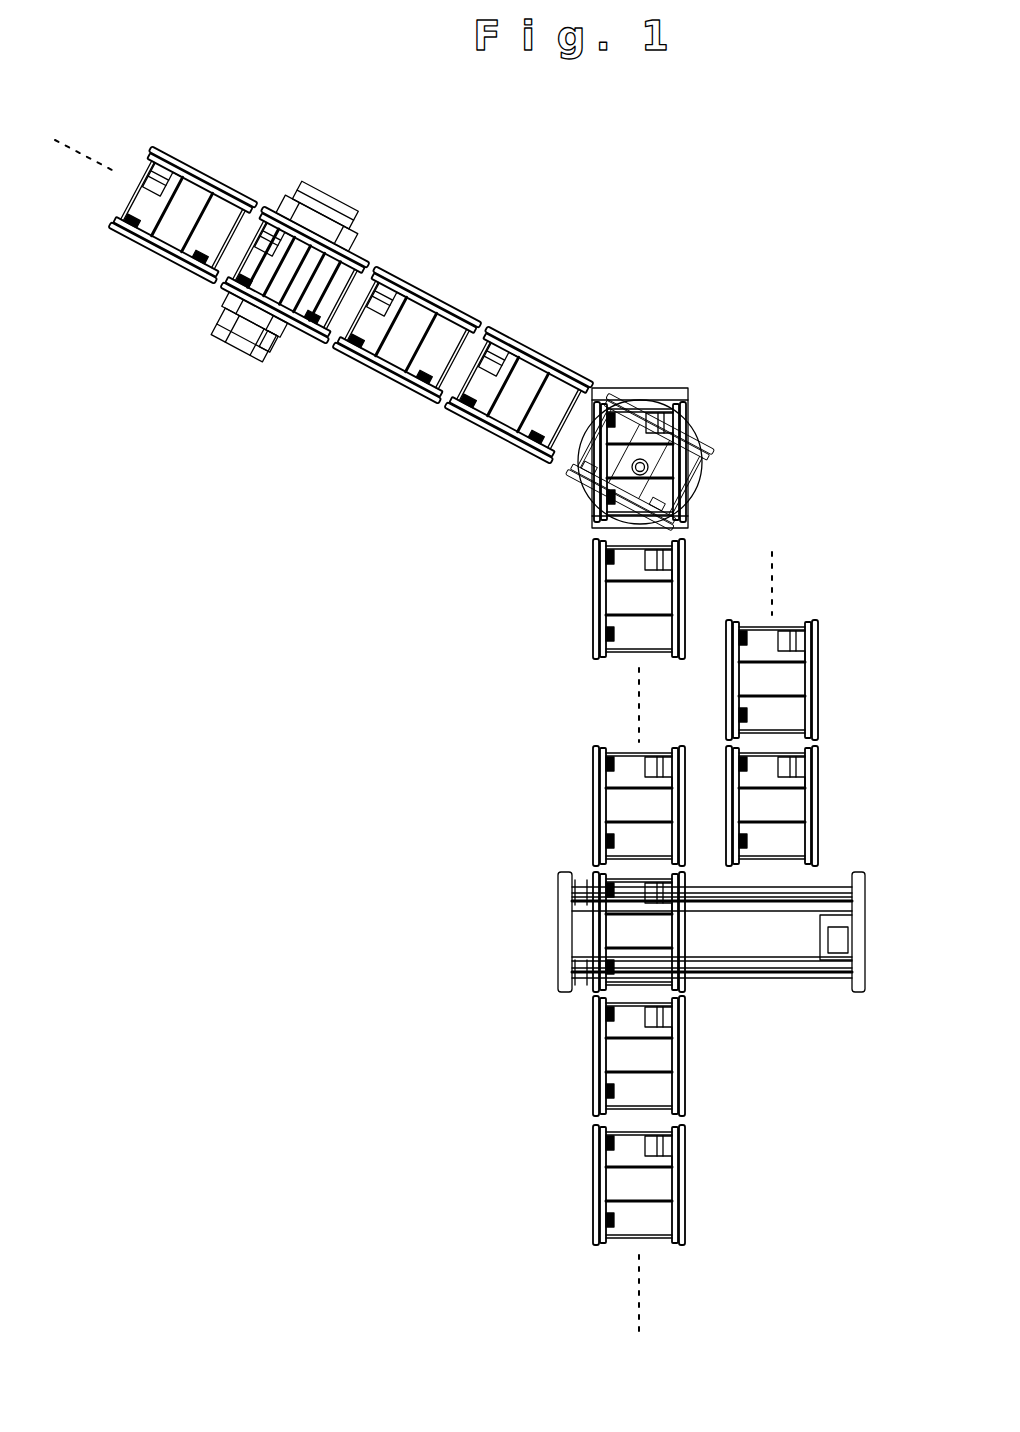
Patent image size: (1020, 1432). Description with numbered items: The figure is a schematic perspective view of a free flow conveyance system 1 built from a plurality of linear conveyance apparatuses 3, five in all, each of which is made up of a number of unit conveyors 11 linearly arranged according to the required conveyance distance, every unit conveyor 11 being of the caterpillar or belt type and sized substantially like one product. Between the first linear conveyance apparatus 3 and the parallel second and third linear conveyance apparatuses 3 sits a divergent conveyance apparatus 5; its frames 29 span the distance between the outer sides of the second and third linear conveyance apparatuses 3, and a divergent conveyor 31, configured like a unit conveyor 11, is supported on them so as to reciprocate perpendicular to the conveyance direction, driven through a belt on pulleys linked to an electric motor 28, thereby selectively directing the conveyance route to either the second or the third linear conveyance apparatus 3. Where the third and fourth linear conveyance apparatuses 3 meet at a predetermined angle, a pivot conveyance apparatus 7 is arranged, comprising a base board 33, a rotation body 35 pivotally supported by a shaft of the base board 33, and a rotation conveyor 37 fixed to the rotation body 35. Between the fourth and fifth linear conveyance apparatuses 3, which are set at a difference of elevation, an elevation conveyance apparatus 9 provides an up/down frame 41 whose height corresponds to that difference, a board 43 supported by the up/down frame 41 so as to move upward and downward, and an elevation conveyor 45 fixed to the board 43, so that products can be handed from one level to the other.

The free flow conveyance system 1 is at (424, 779).
The linear conveyance apparatus 3 is at (229, 165).
The divergent conveyance apparatus 5 is at (687, 950).
The pivot conveyance apparatus 7 is at (664, 464).
The elevation conveyance apparatus 9 is at (358, 192).
The unit conveyor 11 is at (190, 185).
The electric motor 28 is at (845, 940).
The frame 29 is at (780, 970).
The divergent conveyor 31 is at (680, 955).
The base board 33 is at (680, 397).
The rotation body 35 is at (700, 485).
The rotation conveyor 37 is at (598, 490).
The up/down frame 41 is at (288, 352).
The board 43 is at (265, 340).
The elevation conveyor 45 is at (262, 298).